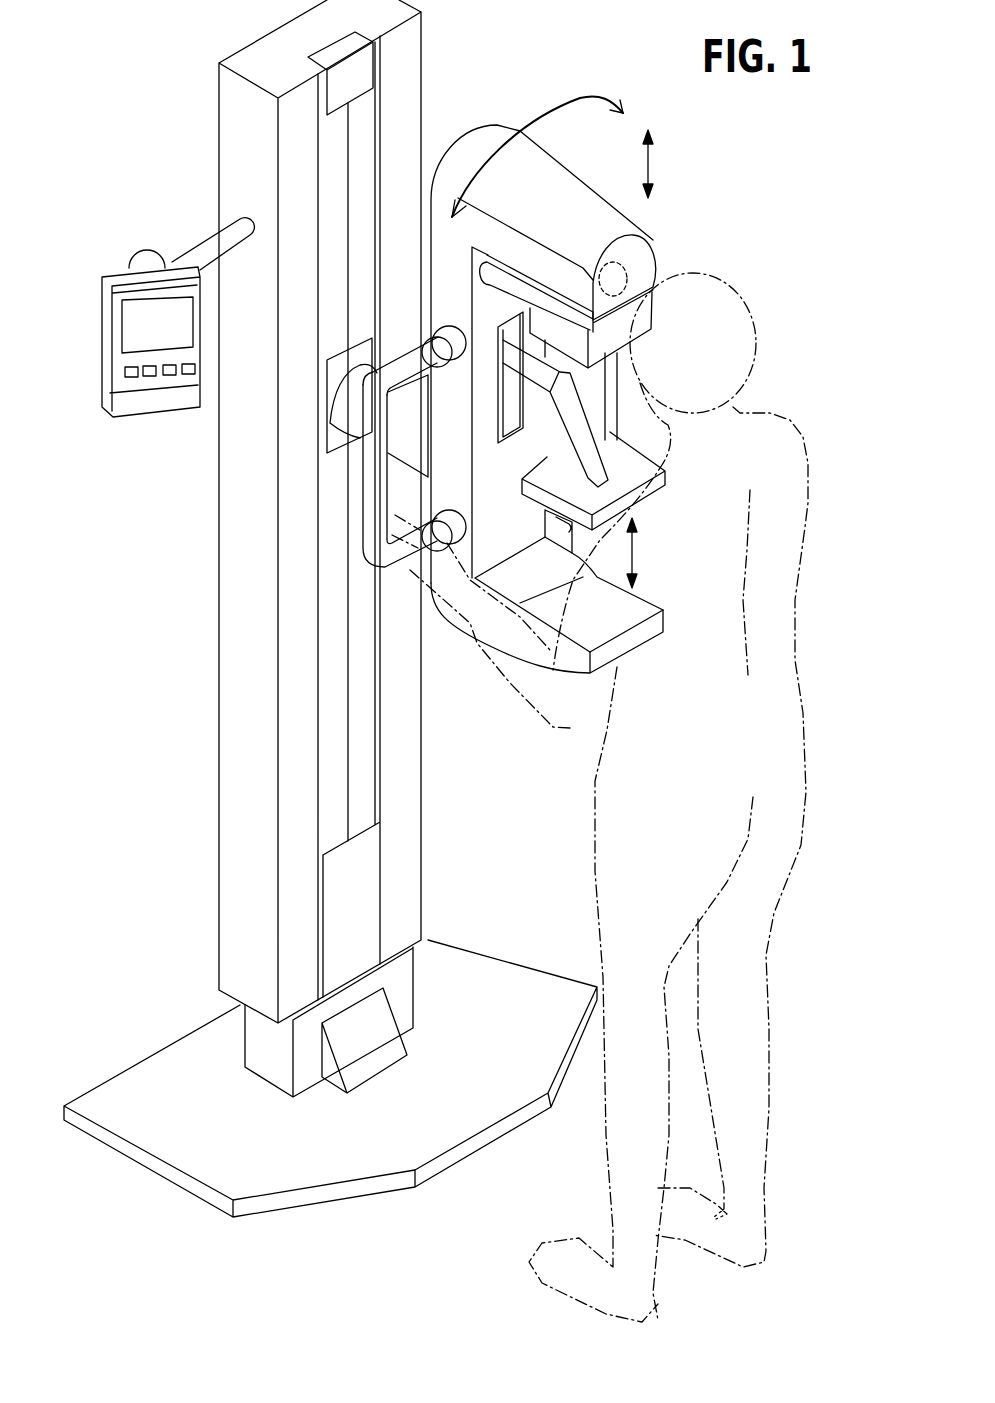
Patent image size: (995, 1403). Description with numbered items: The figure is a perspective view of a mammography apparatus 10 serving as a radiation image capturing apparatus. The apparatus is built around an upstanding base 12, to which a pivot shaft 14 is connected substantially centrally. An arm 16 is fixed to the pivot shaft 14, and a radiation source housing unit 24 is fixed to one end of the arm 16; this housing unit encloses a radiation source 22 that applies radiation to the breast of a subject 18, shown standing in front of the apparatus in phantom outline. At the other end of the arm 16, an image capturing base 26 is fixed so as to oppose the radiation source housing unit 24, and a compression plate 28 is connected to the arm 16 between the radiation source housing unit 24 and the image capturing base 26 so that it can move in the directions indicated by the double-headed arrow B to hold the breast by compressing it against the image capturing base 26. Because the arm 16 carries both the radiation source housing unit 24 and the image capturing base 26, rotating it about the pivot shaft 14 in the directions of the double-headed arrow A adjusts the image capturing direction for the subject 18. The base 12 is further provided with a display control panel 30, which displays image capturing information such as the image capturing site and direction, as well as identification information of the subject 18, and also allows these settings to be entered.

The mammography apparatus 10 is at (798, 170).
The base 12 is at (235, 583).
The pivot shaft 14 is at (407, 417).
The arm 16 is at (445, 268).
The subject 18 is at (775, 714).
The radiation source 22 is at (603, 266).
The radiation source housing unit 24 is at (655, 252).
The image capturing base 26 is at (583, 622).
The compression plate 28 is at (630, 470).
The display control panel 30 is at (132, 328).